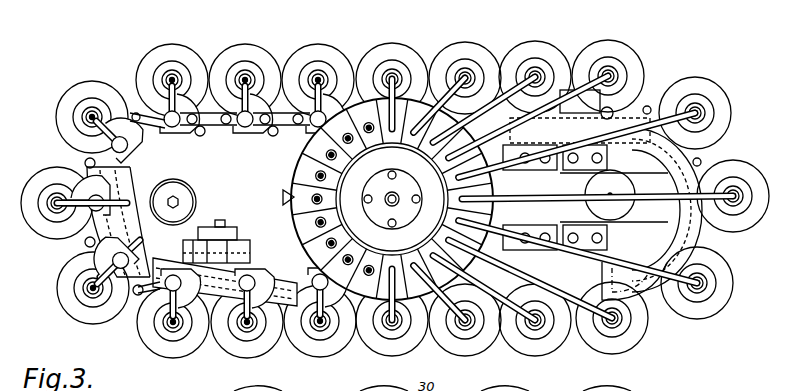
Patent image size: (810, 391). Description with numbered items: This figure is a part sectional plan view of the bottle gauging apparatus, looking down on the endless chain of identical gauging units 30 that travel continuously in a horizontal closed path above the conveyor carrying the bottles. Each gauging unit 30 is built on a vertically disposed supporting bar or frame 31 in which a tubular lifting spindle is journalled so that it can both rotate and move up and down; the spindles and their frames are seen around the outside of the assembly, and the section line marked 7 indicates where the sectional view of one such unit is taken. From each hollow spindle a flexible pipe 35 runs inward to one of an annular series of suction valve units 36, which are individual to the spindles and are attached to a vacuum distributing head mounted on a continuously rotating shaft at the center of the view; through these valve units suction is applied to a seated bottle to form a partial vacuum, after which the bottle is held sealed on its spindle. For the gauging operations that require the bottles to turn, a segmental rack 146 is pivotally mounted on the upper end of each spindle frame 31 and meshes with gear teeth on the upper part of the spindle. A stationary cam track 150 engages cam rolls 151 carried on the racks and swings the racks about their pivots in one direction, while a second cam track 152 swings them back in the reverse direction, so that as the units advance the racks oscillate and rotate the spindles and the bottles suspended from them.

The gauging unit 30 is at (291, 46).
The supporting bar or frame 31 is at (617, 323).
The flexible pipe 35 is at (507, 231).
The suction valve unit 36 is at (305, 172).
The segmental rack 146 is at (188, 110).
The stationary cam track 150 is at (266, 284).
The cam roll 151 is at (141, 143).
The cam track 152 is at (647, 287).
The section line 7- 7 is at (19, 203).